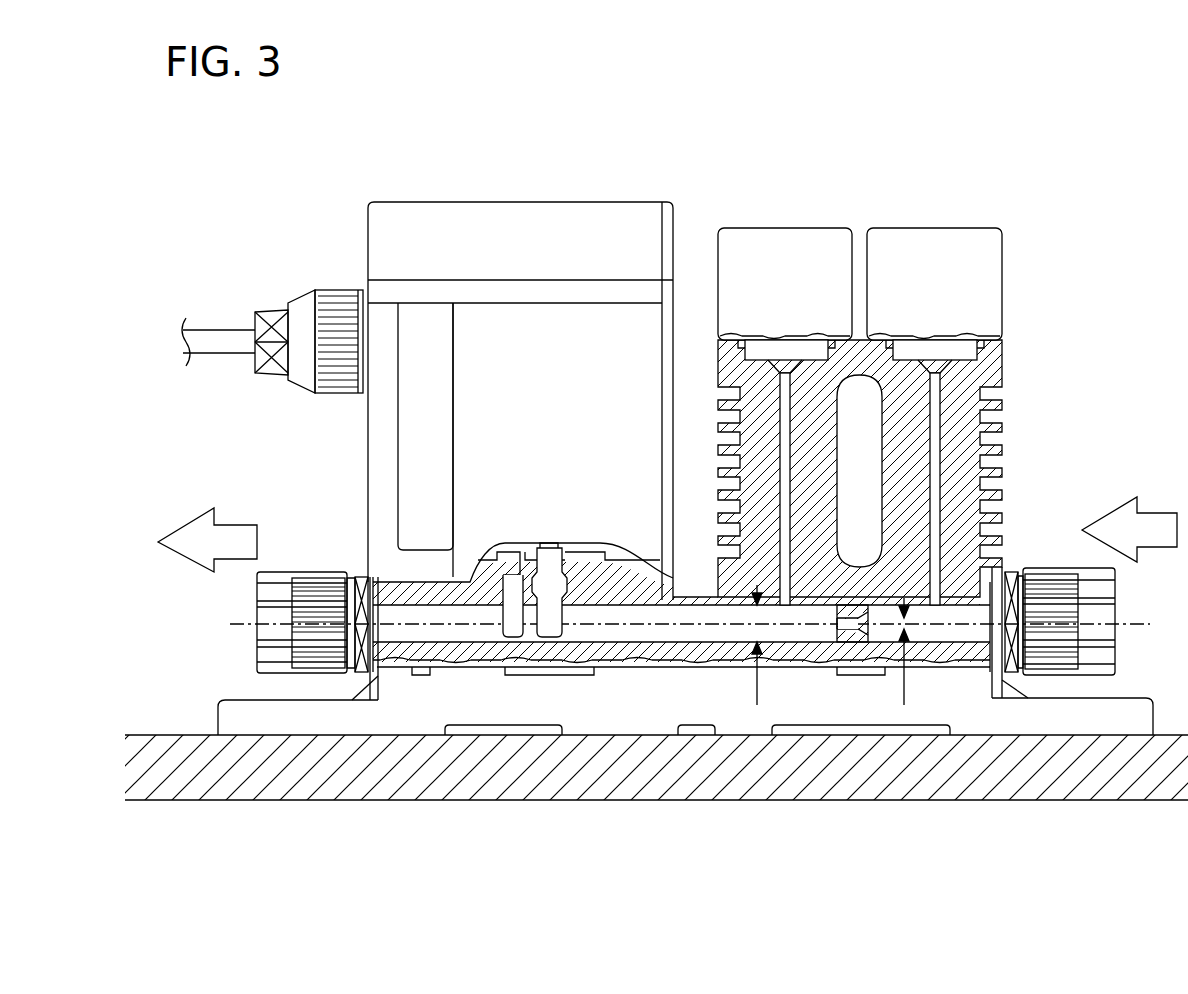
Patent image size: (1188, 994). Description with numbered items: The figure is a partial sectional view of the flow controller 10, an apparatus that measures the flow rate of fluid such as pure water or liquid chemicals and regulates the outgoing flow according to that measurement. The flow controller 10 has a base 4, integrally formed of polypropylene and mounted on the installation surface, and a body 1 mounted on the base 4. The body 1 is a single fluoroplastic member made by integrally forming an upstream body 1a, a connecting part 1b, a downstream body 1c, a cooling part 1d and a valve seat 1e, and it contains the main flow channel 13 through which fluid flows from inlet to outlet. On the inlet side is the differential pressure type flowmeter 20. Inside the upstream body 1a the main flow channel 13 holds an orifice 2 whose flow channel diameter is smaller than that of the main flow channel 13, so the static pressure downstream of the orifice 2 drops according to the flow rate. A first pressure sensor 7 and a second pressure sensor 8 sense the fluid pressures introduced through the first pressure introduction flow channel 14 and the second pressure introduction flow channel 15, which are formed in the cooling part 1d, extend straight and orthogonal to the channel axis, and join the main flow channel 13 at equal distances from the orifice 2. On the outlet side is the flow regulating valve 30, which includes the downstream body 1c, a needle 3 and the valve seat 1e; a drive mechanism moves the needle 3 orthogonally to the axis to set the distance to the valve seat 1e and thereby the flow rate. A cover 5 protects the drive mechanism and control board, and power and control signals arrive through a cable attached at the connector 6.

The body 1 is at (958, 570).
The upstream body 1a is at (935, 660).
The connecting part 1b is at (683, 660).
The downstream body 1c is at (468, 660).
The cooling part 1d is at (1024, 420).
The valve seat 1e is at (530, 590).
The orifice 2 is at (850, 645).
The needle 3 is at (553, 605).
The base 4 is at (1000, 715).
The cover 5 is at (390, 225).
The connector 6 is at (279, 308).
The first pressure sensor 7 is at (933, 258).
The second pressure sensor 8 is at (783, 258).
The flow controller 10 is at (708, 105).
The main flow channel 13 is at (785, 635).
The first pressure introduction flow channel 14 is at (930, 470).
The second pressure introduction flow channel 15 is at (788, 423).
The differential pressure type flowmeter 20 is at (1007, 165).
The flow regulating valve 30 is at (677, 165).